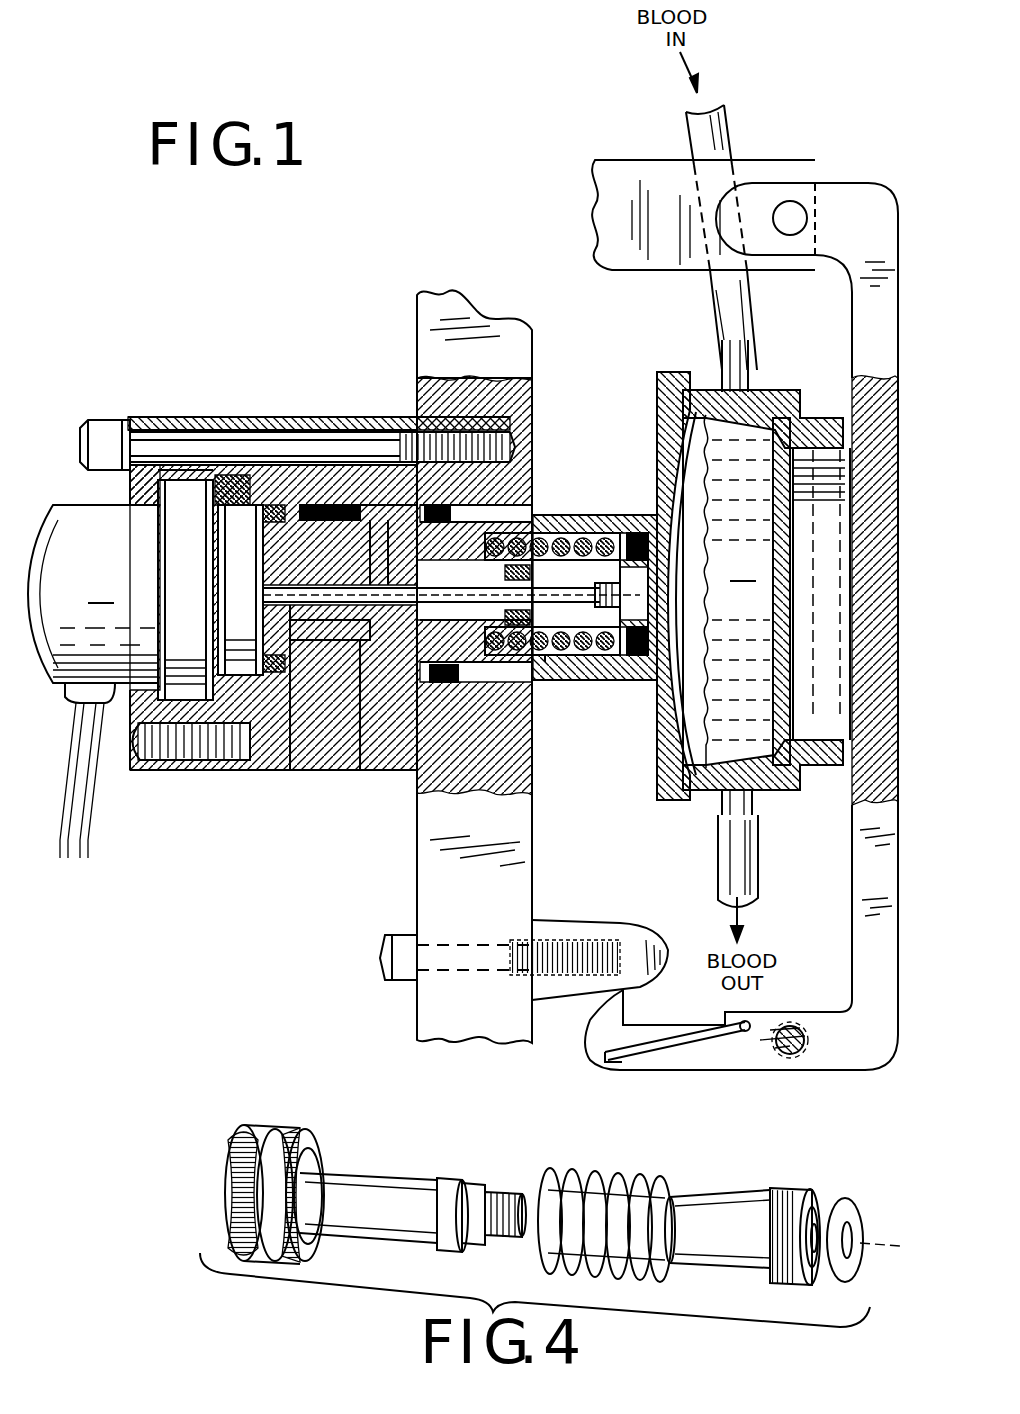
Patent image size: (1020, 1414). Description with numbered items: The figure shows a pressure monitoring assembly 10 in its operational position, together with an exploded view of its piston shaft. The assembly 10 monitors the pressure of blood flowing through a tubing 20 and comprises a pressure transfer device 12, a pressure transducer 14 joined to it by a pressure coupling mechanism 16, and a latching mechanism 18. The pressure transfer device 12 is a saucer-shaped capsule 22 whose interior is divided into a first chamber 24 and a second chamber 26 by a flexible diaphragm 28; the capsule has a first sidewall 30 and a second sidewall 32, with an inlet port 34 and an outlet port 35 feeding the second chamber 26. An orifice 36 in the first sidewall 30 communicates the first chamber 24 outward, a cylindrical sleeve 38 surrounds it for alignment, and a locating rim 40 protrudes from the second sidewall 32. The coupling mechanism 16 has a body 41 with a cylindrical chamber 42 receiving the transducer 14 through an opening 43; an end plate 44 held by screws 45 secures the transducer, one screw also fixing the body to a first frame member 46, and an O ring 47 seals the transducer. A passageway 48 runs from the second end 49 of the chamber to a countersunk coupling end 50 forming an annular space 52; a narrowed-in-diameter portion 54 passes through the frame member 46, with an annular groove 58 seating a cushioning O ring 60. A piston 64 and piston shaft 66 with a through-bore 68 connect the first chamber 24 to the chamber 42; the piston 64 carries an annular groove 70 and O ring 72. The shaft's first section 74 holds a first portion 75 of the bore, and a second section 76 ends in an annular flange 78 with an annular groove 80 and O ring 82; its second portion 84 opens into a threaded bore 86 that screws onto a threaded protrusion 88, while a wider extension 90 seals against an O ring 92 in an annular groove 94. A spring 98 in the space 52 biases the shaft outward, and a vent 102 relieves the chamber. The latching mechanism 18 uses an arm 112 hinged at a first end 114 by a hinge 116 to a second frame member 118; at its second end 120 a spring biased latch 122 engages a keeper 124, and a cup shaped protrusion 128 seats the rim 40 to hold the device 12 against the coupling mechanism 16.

In FIG. 1, the pressure monitoring assembly 10 is at (258, 785).
In FIG. 1, the pressure transfer device 12 is at (640, 800).
In FIG. 1, the pressure transducer 14 is at (93, 681).
In FIG. 1, the pressure coupling mechanism 16 is at (305, 790).
In FIG. 4, the pressure coupling mechanism 16 is at (488, 1165).
In FIG. 1, the latching mechanism 18 is at (822, 1084).
In FIG. 1, the tubing 20 is at (720, 118).
In FIG. 1, the capsule 22 is at (790, 410).
In FIG. 1, the first chamber 24 is at (690, 623).
In FIG. 1, the second chamber 26 is at (741, 590).
In FIG. 1, the flexible diaphragm 28 is at (720, 672).
In FIG. 1, the first sidewall 30 is at (668, 430).
In FIG. 1, the second sidewall 32 is at (795, 565).
In FIG. 1, the inlet port 34 is at (760, 378).
In FIG. 1, the outlet port 35 is at (760, 815).
In FIG. 1, the orifice 36 is at (668, 595).
In FIG. 1, the cylindrical sleeve 38 is at (600, 716).
In FIG. 1, the locating rim 40 is at (830, 425).
In FIG. 1, the body 41 is at (266, 417).
In FIG. 1, the cylindrical chamber 42 is at (367, 520).
In FIG. 1, the opening 43 is at (192, 490).
In FIG. 1, the end plate 44 is at (140, 487).
In FIG. 1, the screws 45 is at (103, 430).
In FIG. 1, the first frame member 46 is at (417, 905).
In FIG. 1, the O ring 47 is at (232, 470).
In FIG. 1, the passageway 48 is at (500, 540).
In FIG. 1, the second end 49 is at (395, 530).
In FIG. 1, the coupling end 50 is at (520, 522).
In FIG. 1, the annular space 52 is at (590, 515).
In FIG. 1, the narrowed-in-diameter portion 54 is at (485, 665).
In FIG. 1, the annular groove 58 is at (437, 500).
In FIG. 1, the O ring 60 is at (445, 682).
In FIG. 1, the piston 64 is at (290, 562).
In FIG. 4, the piston 64 is at (320, 1145).
In FIG. 4, the piston shaft 66 is at (406, 1165).
In FIG. 1, the through-bore 68 is at (290, 590).
In FIG. 4, the through-bore 68 is at (523, 1215).
In FIG. 1, the annular groove 70 is at (300, 665).
In FIG. 1, the O ring 72 is at (305, 505).
In FIG. 4, the O ring 72 is at (270, 1140).
In FIG. 1, the first section 74 is at (451, 595).
In FIG. 4, the first section 74 is at (370, 1222).
In FIG. 1, the first portion 75 is at (400, 622).
In FIG. 4, the second section 76 is at (706, 1203).
In FIG. 4, the annular flange 78 is at (797, 1190).
In FIG. 1, the annular groove 80 is at (628, 680).
In FIG. 4, the annular groove 80 is at (818, 1210).
In FIG. 1, the O ring 82 is at (636, 533).
In FIG. 4, the O ring 82 is at (855, 1207).
In FIG. 1, the second portion 84 is at (598, 665).
In FIG. 1, the threaded bore 86 is at (545, 668).
In FIG. 1, the threaded protrusion 88 is at (575, 665).
In FIG. 4, the threaded protrusion 88 is at (495, 1237).
In FIG. 1, the wider extension 90 is at (504, 577).
In FIG. 1, the O ring 92 is at (508, 660).
In FIG. 4, the O ring 92 is at (440, 1228).
In FIG. 1, the annular groove 94 is at (520, 598).
In FIG. 1, the spring 98 is at (600, 535).
In FIG. 4, the spring 98 is at (610, 1195).
In FIG. 1, the vent 102 is at (368, 772).
In FIG. 1, the arm 112 is at (893, 300).
In FIG. 1, the first end 114 is at (865, 205).
In FIG. 1, the hinge 116 is at (790, 218).
In FIG. 1, the second frame member 118 is at (760, 165).
In FIG. 1, the second end 120 is at (875, 1055).
In FIG. 1, the spring biased latch 122 is at (650, 1062).
In FIG. 1, the keeper 124 is at (638, 930).
In FIG. 1, the cup shaped protrusion 128 is at (830, 720).